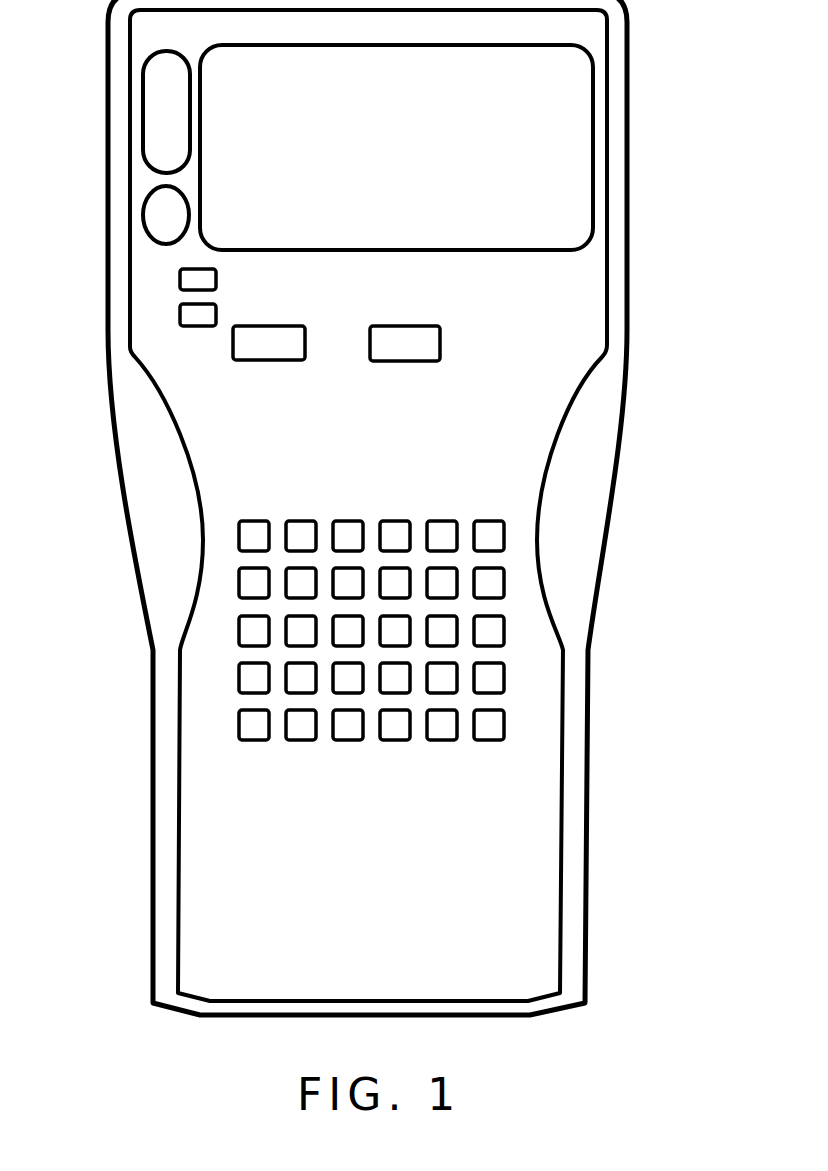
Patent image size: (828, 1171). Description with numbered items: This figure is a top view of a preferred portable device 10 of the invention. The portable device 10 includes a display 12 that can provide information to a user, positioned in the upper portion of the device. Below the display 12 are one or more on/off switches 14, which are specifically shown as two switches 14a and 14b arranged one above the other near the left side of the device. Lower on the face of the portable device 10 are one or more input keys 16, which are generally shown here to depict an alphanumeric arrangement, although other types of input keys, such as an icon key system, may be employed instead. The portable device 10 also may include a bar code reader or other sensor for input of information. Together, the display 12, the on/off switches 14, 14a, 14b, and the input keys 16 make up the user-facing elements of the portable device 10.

The portable device 10 is at (668, 350).
The display 12 is at (573, 124).
The on/off switches 14 is at (173, 298).
The on/off switch 14a is at (203, 281).
The on/off switch 14b is at (236, 311).
The input keys 16 is at (233, 517).